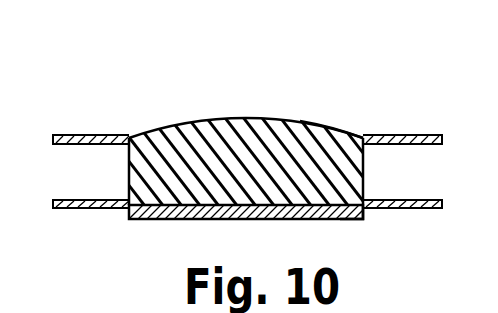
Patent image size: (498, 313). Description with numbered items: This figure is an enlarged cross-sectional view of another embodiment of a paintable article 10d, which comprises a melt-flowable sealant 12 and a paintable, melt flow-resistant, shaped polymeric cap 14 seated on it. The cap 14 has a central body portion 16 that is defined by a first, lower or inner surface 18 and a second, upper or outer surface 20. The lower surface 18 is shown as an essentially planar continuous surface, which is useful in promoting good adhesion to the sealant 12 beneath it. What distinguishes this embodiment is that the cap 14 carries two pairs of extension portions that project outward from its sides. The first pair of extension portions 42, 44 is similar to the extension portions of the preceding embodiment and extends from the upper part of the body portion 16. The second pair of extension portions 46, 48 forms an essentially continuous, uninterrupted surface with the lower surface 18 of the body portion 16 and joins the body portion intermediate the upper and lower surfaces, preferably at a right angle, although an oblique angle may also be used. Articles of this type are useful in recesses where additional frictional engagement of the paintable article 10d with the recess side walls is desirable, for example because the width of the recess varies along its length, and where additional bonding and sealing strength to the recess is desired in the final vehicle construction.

The paintable article 10d is at (254, 105).
The sealant 12 is at (351, 210).
The cap 14 is at (201, 118).
The central body portion 16 is at (330, 148).
The lower surface 18 is at (160, 211).
The upper surface 20 is at (309, 122).
The extension portion 42 is at (402, 137).
The extension portion 44 is at (95, 137).
The extension portion 46 is at (403, 203).
The extension portion 48 is at (72, 202).